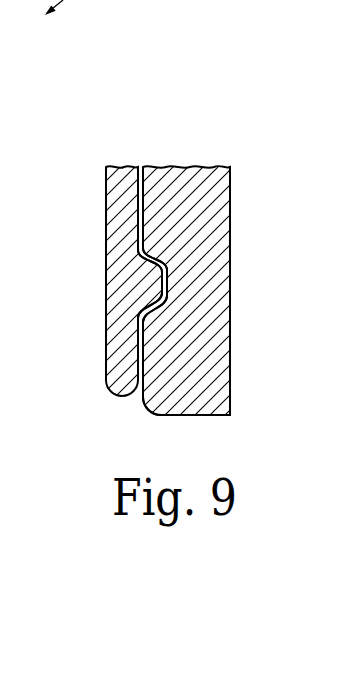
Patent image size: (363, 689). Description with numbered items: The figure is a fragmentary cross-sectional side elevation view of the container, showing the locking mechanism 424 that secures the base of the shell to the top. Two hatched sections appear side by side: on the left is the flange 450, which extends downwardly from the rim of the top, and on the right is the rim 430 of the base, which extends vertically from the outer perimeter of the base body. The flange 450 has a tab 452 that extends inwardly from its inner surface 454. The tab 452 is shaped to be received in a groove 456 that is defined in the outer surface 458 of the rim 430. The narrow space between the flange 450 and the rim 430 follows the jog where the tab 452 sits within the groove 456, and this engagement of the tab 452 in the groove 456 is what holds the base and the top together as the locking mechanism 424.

The locking mechanism 424 is at (192, 128).
The rim 430 is at (220, 353).
The flange 450 is at (117, 202).
The tab 452 is at (156, 290).
The inner surface 454 is at (140, 370).
The groove 456 is at (166, 264).
The outer surface 458 is at (138, 398).